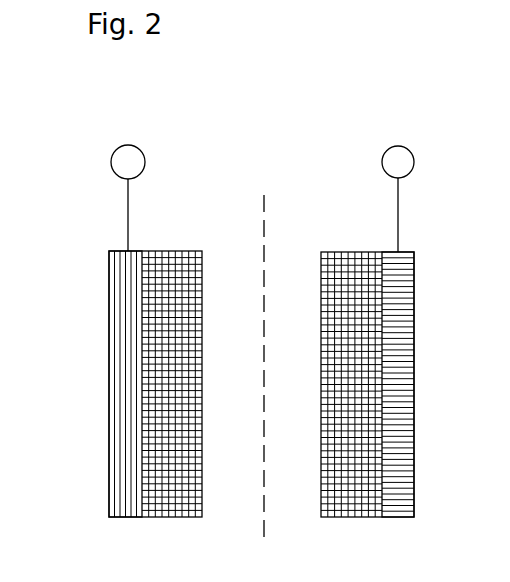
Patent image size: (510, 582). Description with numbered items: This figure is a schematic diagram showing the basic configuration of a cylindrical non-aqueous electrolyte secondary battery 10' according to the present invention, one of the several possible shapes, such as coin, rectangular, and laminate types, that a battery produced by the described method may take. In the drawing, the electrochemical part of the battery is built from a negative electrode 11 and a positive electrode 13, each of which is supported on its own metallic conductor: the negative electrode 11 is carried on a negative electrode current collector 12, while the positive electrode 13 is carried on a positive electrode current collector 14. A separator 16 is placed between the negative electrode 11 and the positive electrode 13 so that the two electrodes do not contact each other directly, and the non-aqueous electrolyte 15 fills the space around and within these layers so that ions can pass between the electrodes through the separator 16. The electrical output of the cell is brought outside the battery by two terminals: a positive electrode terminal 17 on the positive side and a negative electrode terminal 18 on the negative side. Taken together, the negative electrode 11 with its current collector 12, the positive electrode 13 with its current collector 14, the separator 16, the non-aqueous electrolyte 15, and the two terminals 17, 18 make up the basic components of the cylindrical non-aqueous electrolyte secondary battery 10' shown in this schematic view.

The cylindrical non-aqueous electrolyte secondary battery 10' is at (277, 79).
The negative electrode 11 is at (168, 500).
The negative electrode current collector 12 is at (108, 478).
The positive electrode 13 is at (343, 500).
The positive electrode current collector 14 is at (392, 490).
The non-aqueous electrolyte 15 is at (307, 379).
The separator 16 is at (266, 230).
The positive electrode terminal 17 is at (413, 154).
The negative electrode terminal 18 is at (145, 152).